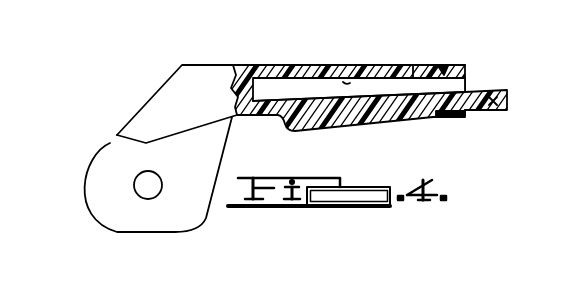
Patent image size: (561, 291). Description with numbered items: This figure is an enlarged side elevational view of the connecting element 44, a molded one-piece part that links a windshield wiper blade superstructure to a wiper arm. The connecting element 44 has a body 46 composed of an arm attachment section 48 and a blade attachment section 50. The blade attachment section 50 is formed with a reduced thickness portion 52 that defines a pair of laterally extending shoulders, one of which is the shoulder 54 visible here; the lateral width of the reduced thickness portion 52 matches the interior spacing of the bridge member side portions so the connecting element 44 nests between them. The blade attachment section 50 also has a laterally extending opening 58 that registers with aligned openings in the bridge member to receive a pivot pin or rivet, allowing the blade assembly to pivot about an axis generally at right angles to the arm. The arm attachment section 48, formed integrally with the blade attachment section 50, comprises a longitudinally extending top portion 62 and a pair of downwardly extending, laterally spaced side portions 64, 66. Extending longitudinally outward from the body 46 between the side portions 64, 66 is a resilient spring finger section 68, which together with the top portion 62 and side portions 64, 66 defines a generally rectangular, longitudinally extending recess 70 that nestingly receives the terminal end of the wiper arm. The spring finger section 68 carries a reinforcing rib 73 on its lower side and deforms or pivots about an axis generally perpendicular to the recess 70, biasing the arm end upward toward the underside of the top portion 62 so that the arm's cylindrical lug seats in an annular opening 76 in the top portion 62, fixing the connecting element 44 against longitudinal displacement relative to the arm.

The connecting element 44 is at (326, 62).
The body 46 is at (212, 70).
The arm attachment section 48 is at (330, 107).
The blade attachment section 50 is at (108, 145).
The reduced thickness portion 52 is at (138, 220).
The shoulder 54 is at (179, 139).
The laterally extending opening 58 is at (143, 182).
The top portion 62 is at (467, 72).
The side portion 64 is at (456, 88).
The side portion 66 is at (560, 253).
The resilient spring finger section 68 is at (493, 104).
The recess 70 is at (346, 82).
The reinforcing rib 73 is at (420, 100).
The annular opening 76 is at (421, 75).